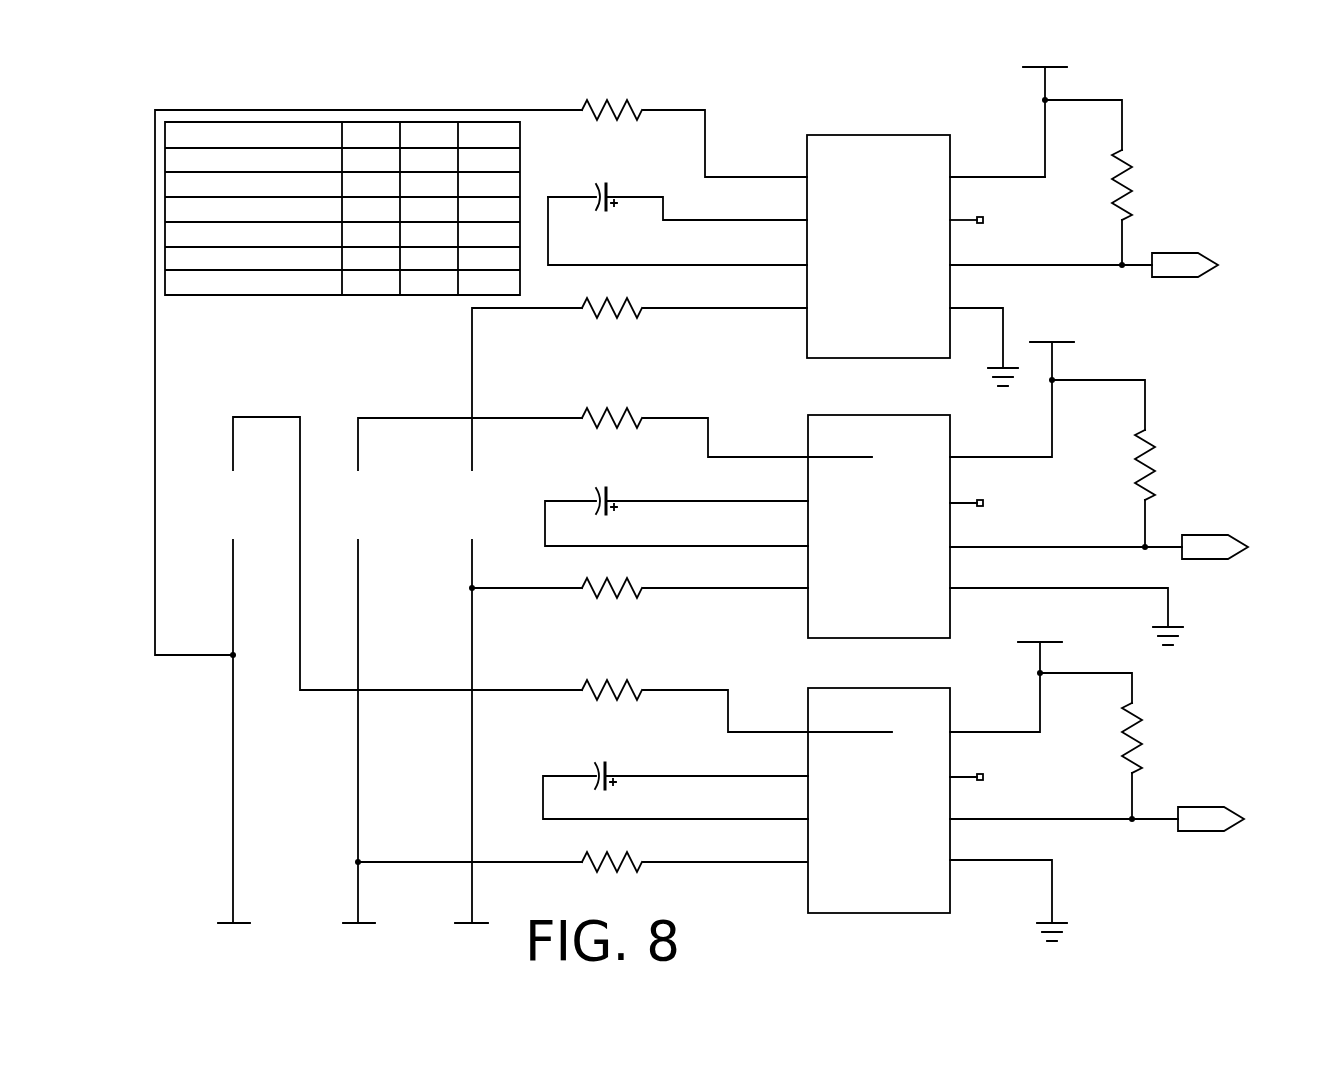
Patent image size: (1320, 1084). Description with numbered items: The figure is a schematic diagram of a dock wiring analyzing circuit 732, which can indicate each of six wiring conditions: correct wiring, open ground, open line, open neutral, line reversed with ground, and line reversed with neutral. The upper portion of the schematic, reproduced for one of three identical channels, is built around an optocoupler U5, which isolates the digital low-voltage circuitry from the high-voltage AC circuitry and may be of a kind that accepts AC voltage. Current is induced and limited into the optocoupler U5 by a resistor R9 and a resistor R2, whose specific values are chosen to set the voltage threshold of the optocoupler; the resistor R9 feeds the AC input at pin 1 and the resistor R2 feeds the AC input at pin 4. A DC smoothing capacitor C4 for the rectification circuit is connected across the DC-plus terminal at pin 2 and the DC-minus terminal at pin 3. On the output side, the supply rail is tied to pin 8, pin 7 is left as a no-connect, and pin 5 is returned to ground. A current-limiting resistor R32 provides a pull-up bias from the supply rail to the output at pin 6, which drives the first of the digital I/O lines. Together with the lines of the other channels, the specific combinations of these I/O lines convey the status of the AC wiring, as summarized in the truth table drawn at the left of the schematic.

The dock wiring analyzing circuit 732 is at (701, 495).
The AC input pin 1 of U5 1 is at (725, 143).
The DC+ pin 2 of U5 2 is at (706, 208).
The DC- pin 3 of U5 3 is at (677, 231).
The AC input pin 4 of U5 4 is at (725, 298).
The GND pin 5 of U5 5 is at (984, 337).
The Vo output pin 6 of U5 6 is at (1084, 261).
The NC pin 7 of U5 7 is at (966, 212).
The Vcc pin 8 of U5 8 is at (997, 167).
The optocoupler U5 is at (878, 234).
The resistor R9 is at (613, 109).
The resistor R2 is at (613, 307).
The DC smoothing capacitor C4 is at (590, 193).
The current-limiting resistor R32 is at (1122, 185).